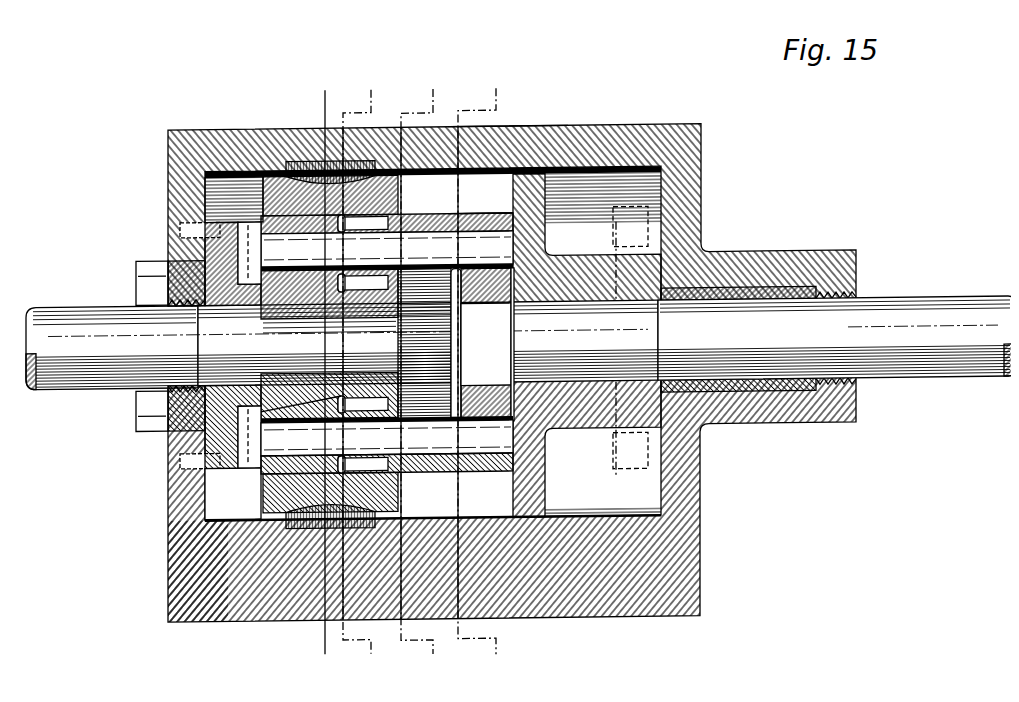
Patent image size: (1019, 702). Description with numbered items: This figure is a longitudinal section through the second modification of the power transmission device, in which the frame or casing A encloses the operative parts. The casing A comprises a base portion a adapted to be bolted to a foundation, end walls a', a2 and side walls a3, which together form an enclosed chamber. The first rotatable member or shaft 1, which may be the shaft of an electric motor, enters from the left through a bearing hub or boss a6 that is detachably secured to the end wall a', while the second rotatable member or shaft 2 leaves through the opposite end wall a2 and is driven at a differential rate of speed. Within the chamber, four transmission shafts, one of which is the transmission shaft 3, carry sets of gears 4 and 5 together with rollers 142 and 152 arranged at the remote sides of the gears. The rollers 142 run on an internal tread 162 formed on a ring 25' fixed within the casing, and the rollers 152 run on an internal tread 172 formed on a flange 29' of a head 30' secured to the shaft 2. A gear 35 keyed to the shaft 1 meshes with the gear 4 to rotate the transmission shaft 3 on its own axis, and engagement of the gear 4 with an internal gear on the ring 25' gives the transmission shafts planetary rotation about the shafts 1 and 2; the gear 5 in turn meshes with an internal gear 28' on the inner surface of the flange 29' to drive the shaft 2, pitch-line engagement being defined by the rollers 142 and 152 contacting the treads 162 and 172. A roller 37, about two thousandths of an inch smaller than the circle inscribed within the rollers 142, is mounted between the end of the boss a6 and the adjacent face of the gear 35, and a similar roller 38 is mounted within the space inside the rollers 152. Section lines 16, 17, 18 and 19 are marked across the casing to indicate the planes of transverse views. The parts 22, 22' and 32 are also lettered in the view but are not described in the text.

The frame A is at (253, 610).
The base portion a is at (512, 492).
The end wall a' is at (176, 571).
The end wall a2 is at (692, 492).
The side walls a3 is at (505, 116).
The bearing hub or boss a6 is at (158, 286).
The shaft 1 is at (70, 376).
The shaft 2 is at (883, 374).
The transmission shaft 3 is at (387, 251).
The gear 4 is at (445, 210).
The gear 5 is at (452, 183).
The rollers 142 is at (210, 202).
The rollers 152 is at (545, 197).
The section line 16 is at (330, 78).
The section line 17 is at (380, 78).
The section line 18 is at (442, 79).
The section line 19 is at (502, 79).
The tread 162 is at (276, 200).
The tread 172 is at (533, 161).
The cover boss 22 is at (330, 345).
The flange with pin 22' is at (387, 170).
The ring 25' is at (237, 165).
The internal gear 28' is at (467, 161).
The flange 29' is at (511, 159).
The head 30' is at (600, 212).
The lower sleeve 32 is at (285, 453).
The gear 35 is at (252, 449).
The roller 37 is at (205, 405).
The roller 38 is at (478, 293).